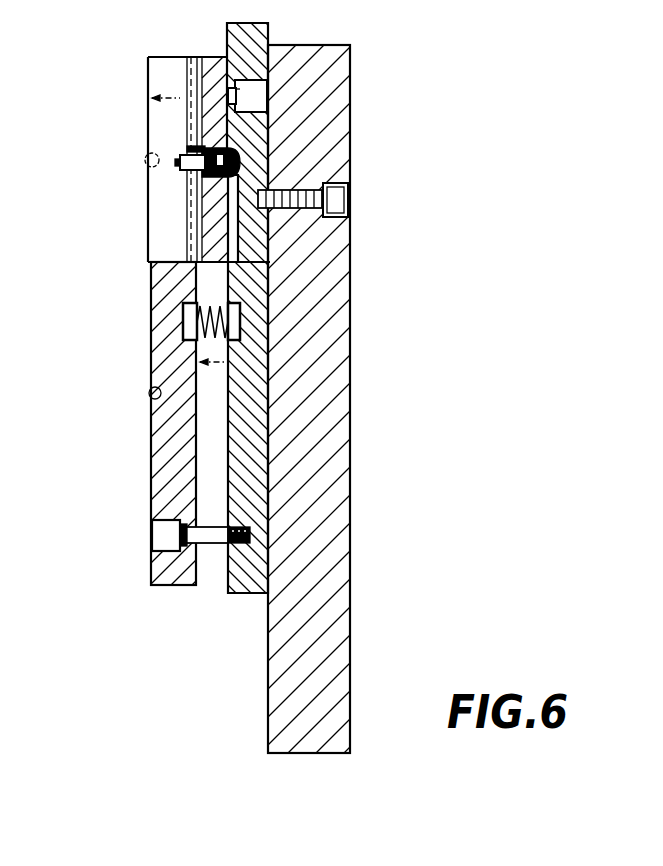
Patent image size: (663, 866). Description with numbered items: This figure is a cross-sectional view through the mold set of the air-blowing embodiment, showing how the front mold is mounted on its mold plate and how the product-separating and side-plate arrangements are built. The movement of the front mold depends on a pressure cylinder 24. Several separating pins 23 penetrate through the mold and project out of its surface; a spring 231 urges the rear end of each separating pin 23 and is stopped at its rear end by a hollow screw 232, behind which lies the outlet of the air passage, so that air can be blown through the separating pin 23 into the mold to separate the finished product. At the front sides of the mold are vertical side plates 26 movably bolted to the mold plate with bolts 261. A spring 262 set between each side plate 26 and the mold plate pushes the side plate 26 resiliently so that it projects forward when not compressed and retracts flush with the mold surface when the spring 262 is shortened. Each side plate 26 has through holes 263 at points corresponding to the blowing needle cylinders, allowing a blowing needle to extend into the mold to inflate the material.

The pressure cylinder 24 is at (255, 93).
The hollow screw 232 is at (240, 152).
The spring 231 is at (192, 144).
The separating pin 23 is at (180, 166).
The side plates 26 is at (148, 80).
The bolts 261 is at (178, 517).
The spring 262 is at (182, 322).
The through holes 263 is at (146, 158).